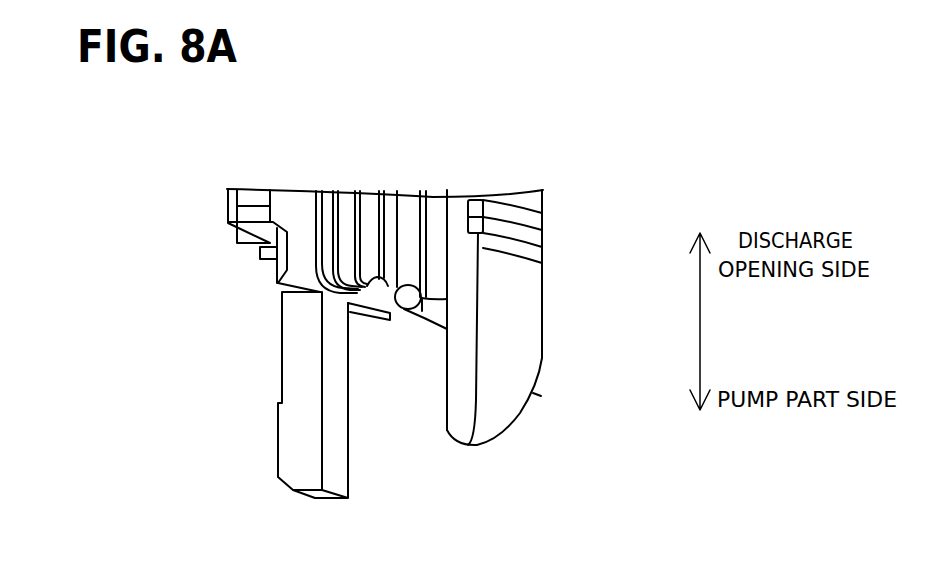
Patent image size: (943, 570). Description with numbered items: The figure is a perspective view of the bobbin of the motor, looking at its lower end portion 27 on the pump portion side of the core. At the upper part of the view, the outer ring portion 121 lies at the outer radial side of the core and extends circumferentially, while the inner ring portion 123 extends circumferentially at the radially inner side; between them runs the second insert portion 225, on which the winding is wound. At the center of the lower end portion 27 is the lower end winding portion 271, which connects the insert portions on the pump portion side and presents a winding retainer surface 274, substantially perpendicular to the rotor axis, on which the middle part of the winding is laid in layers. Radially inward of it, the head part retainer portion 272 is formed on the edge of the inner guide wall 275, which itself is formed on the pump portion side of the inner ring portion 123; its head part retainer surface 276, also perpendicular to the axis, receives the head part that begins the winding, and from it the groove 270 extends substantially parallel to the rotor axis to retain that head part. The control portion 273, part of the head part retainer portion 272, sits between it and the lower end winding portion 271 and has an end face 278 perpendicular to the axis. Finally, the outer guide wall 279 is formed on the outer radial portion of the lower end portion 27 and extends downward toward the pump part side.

The lower end portion 27 is at (548, 174).
The outer ring portion 121 is at (250, 213).
The inner ring portion 123 is at (530, 216).
The second insert portion 225 is at (372, 189).
The groove 270 is at (437, 190).
The lower end winding portion 271 is at (371, 300).
The head part retainer portion 272 is at (461, 279).
The control portion 273 is at (412, 196).
The winding retainer surface 274 is at (390, 292).
The inner guide wall 275 is at (556, 363).
The head part retainer surface 276 is at (436, 328).
The end face 278 is at (412, 318).
The outer guide wall 279 is at (266, 441).